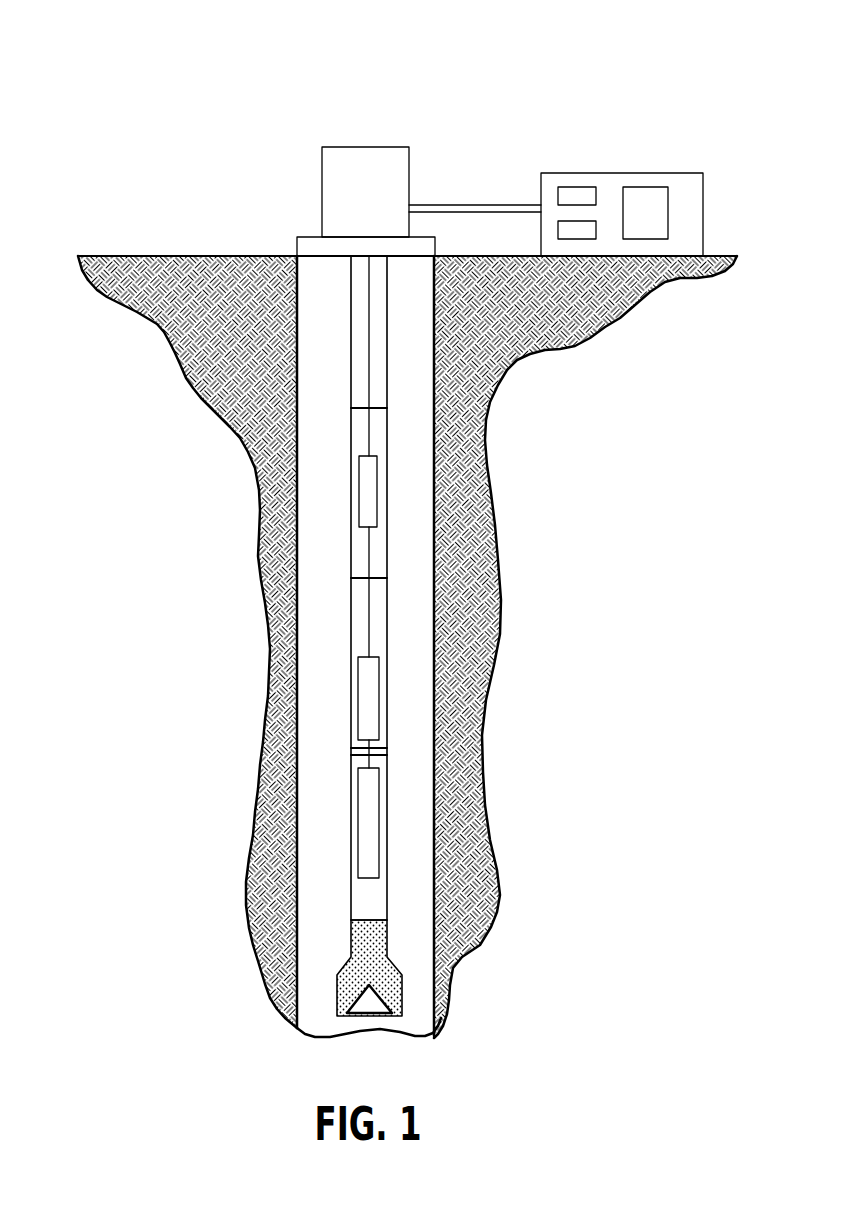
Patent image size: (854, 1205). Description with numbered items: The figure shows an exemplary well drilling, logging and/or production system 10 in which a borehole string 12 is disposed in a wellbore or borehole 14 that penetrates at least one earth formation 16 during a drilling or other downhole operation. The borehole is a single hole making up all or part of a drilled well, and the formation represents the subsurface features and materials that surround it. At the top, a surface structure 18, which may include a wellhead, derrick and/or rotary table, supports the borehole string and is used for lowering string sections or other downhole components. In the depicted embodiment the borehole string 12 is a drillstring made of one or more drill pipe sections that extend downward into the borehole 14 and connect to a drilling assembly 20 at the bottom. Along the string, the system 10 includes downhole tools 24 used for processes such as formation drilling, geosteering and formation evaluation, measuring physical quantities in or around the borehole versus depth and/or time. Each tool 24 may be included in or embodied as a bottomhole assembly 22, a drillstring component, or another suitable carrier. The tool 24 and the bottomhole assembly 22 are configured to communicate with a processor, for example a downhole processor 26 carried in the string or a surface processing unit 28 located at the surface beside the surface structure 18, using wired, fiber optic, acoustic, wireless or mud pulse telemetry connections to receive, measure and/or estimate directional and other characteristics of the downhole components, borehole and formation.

The well drilling, logging and/or production system 10 is at (118, 108).
The borehole string 12 is at (348, 576).
The borehole 14 is at (418, 528).
The earth formation 16 is at (220, 366).
The surface structure 18 is at (366, 147).
The drilling assembly 20 is at (387, 920).
The bottomhole assembly 22 is at (412, 857).
The downhole tool 24 is at (379, 698).
The downhole processor 26 is at (377, 490).
The surface processing unit 28 is at (675, 173).